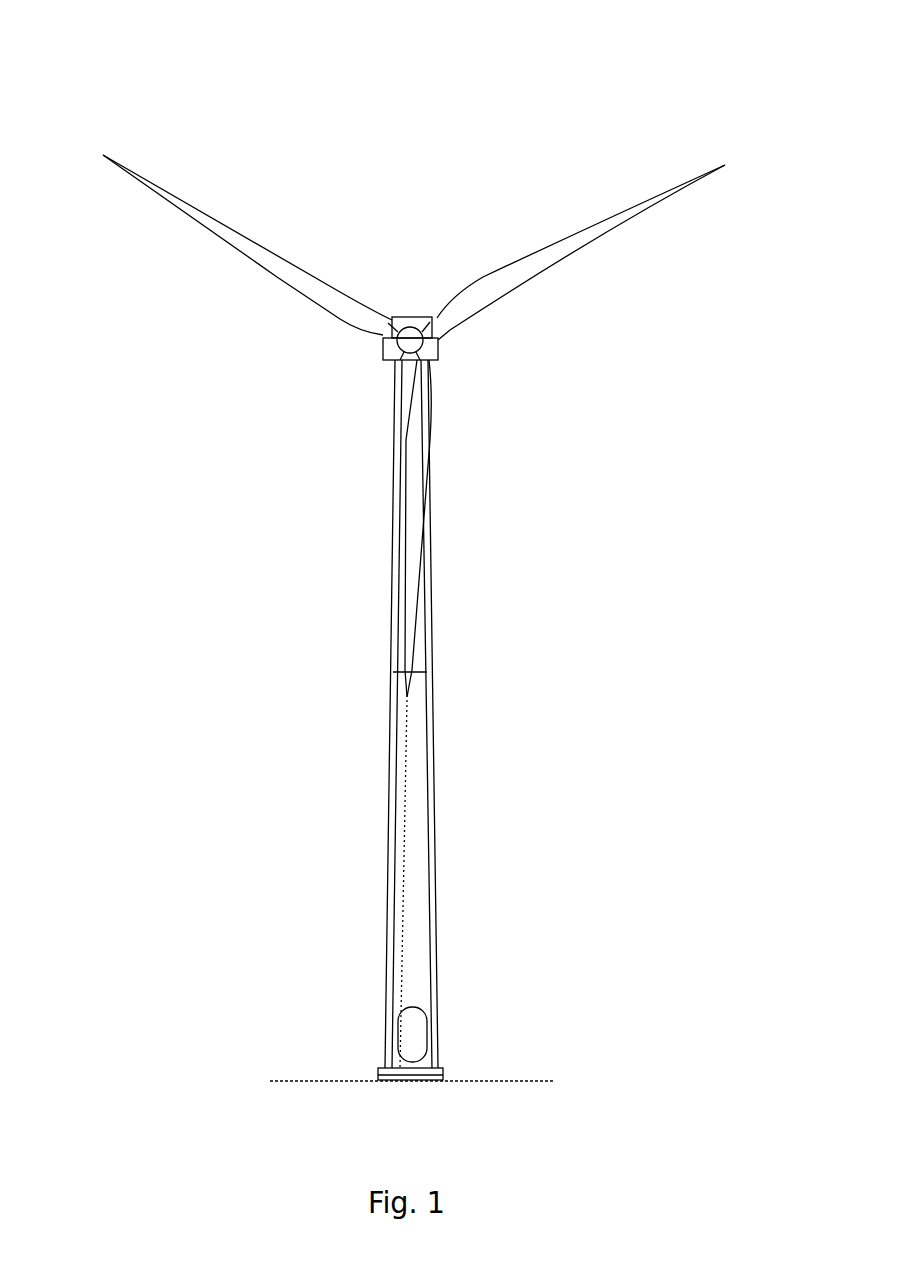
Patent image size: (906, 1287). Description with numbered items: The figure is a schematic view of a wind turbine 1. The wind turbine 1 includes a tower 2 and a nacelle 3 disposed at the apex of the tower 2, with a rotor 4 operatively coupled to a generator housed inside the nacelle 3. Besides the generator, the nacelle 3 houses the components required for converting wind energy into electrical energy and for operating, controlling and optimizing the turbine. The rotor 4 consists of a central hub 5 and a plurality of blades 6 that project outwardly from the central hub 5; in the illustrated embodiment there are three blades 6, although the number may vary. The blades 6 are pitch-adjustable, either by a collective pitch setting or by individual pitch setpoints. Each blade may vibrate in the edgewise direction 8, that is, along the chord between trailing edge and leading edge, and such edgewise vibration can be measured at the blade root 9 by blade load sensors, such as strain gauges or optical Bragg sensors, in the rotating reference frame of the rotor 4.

The wind turbine 1 is at (496, 95).
The tower 2 is at (418, 757).
The nacelle 3 is at (386, 357).
The rotor 4 is at (452, 409).
The central hub 5 is at (411, 341).
The blades 6 is at (597, 233).
The edgewise direction 8 is at (188, 173).
The blade root 9 is at (398, 338).